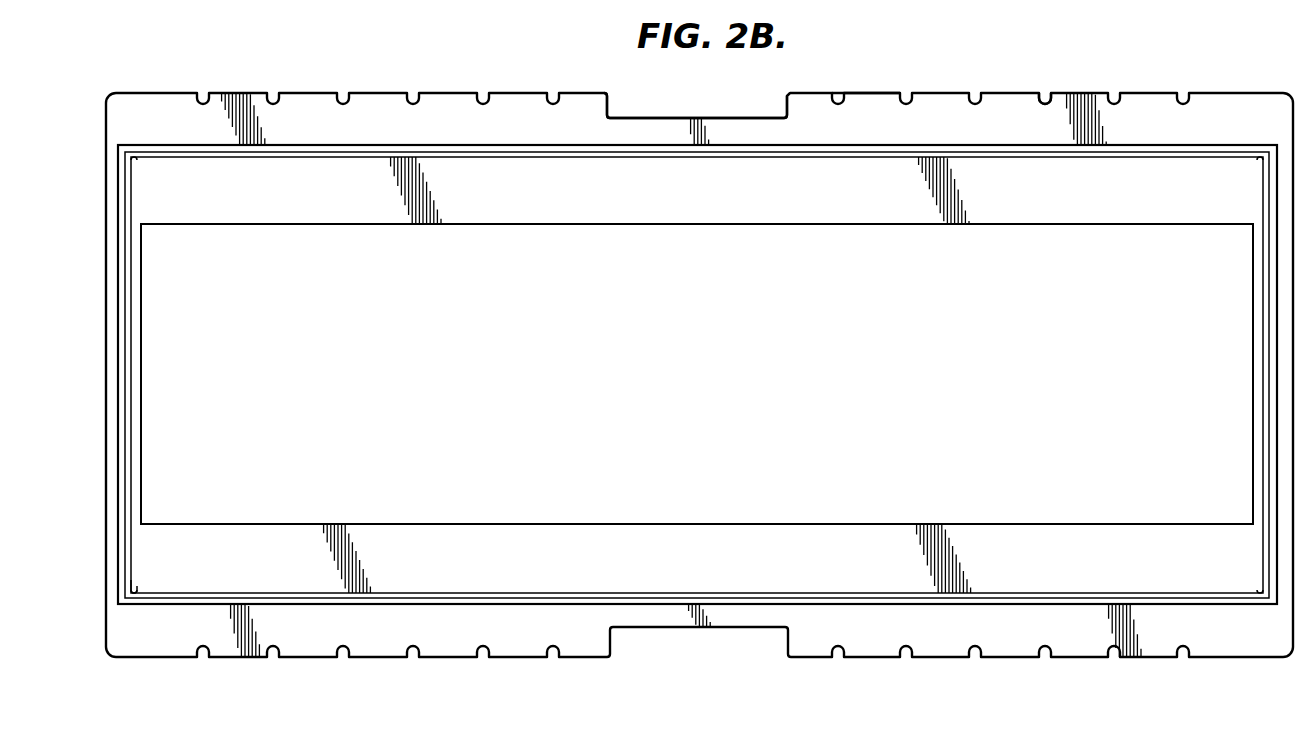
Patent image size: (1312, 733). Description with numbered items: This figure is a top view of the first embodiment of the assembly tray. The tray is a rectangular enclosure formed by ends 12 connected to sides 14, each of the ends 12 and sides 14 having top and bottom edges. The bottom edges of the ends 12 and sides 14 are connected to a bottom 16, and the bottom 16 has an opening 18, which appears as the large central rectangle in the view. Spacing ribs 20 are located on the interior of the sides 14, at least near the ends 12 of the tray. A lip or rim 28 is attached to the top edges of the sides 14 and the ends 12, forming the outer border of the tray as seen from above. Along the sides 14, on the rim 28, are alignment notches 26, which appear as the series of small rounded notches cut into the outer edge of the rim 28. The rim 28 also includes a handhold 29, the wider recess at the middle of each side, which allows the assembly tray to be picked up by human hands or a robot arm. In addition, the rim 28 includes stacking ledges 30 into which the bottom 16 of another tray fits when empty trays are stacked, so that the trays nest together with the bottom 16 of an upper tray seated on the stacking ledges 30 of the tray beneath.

The ends 12 is at (130, 392).
The sides 14 is at (277, 152).
The bottom 16 is at (817, 208).
The opening 18 is at (663, 381).
The spacing ribs 20 is at (143, 580).
The alignment notches 26 is at (1044, 92).
The rim 28 is at (859, 108).
The handhold 29 is at (720, 118).
The stacking ledges 30 is at (360, 145).